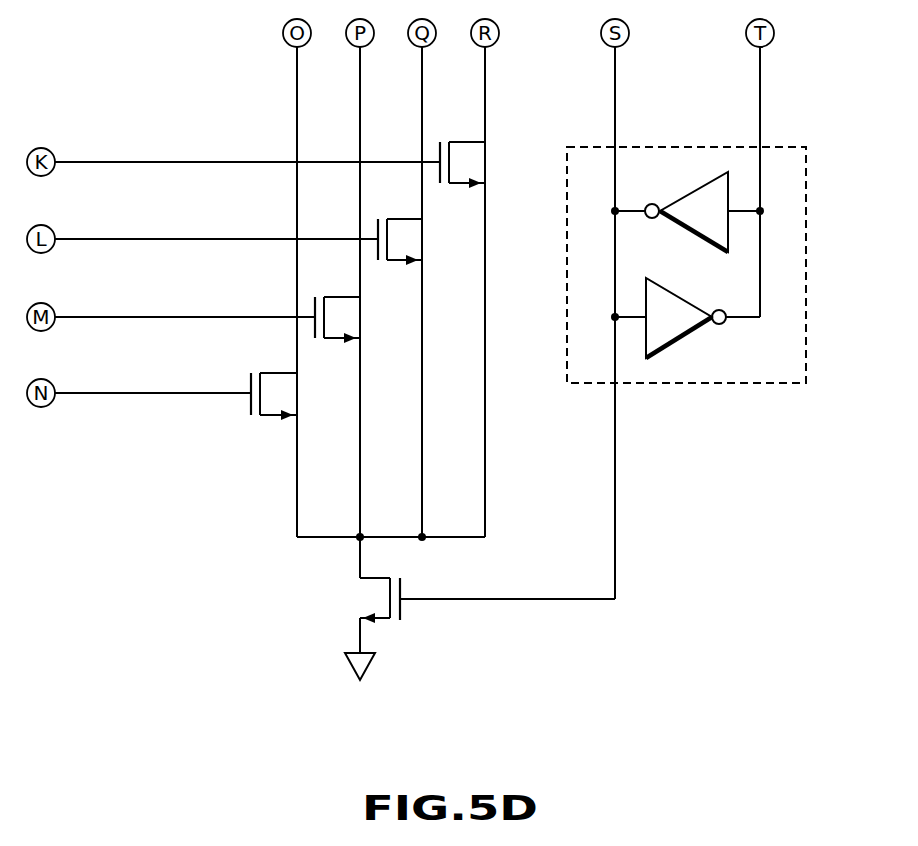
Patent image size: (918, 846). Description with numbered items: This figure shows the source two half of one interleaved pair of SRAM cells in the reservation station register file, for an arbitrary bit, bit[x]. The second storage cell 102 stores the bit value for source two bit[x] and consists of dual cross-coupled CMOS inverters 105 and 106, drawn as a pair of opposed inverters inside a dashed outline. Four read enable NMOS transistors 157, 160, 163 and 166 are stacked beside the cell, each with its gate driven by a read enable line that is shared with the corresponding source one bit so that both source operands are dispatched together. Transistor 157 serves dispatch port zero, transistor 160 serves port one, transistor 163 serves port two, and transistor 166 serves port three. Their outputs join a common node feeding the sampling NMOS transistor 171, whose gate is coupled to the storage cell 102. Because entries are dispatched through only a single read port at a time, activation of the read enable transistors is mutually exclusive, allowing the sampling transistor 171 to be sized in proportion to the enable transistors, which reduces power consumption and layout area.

The second storage cell 102 is at (733, 265).
The CMOS inverter 105 is at (688, 221).
The CMOS inverter 106 is at (650, 327).
The read enable NMOS transistor 157 is at (282, 372).
The read enable NMOS transistor 160 is at (346, 296).
The read enable NMOS transistor 163 is at (410, 218).
The read enable NMOS transistor 166 is at (473, 141).
The sampling NMOS transistor 171 is at (384, 622).